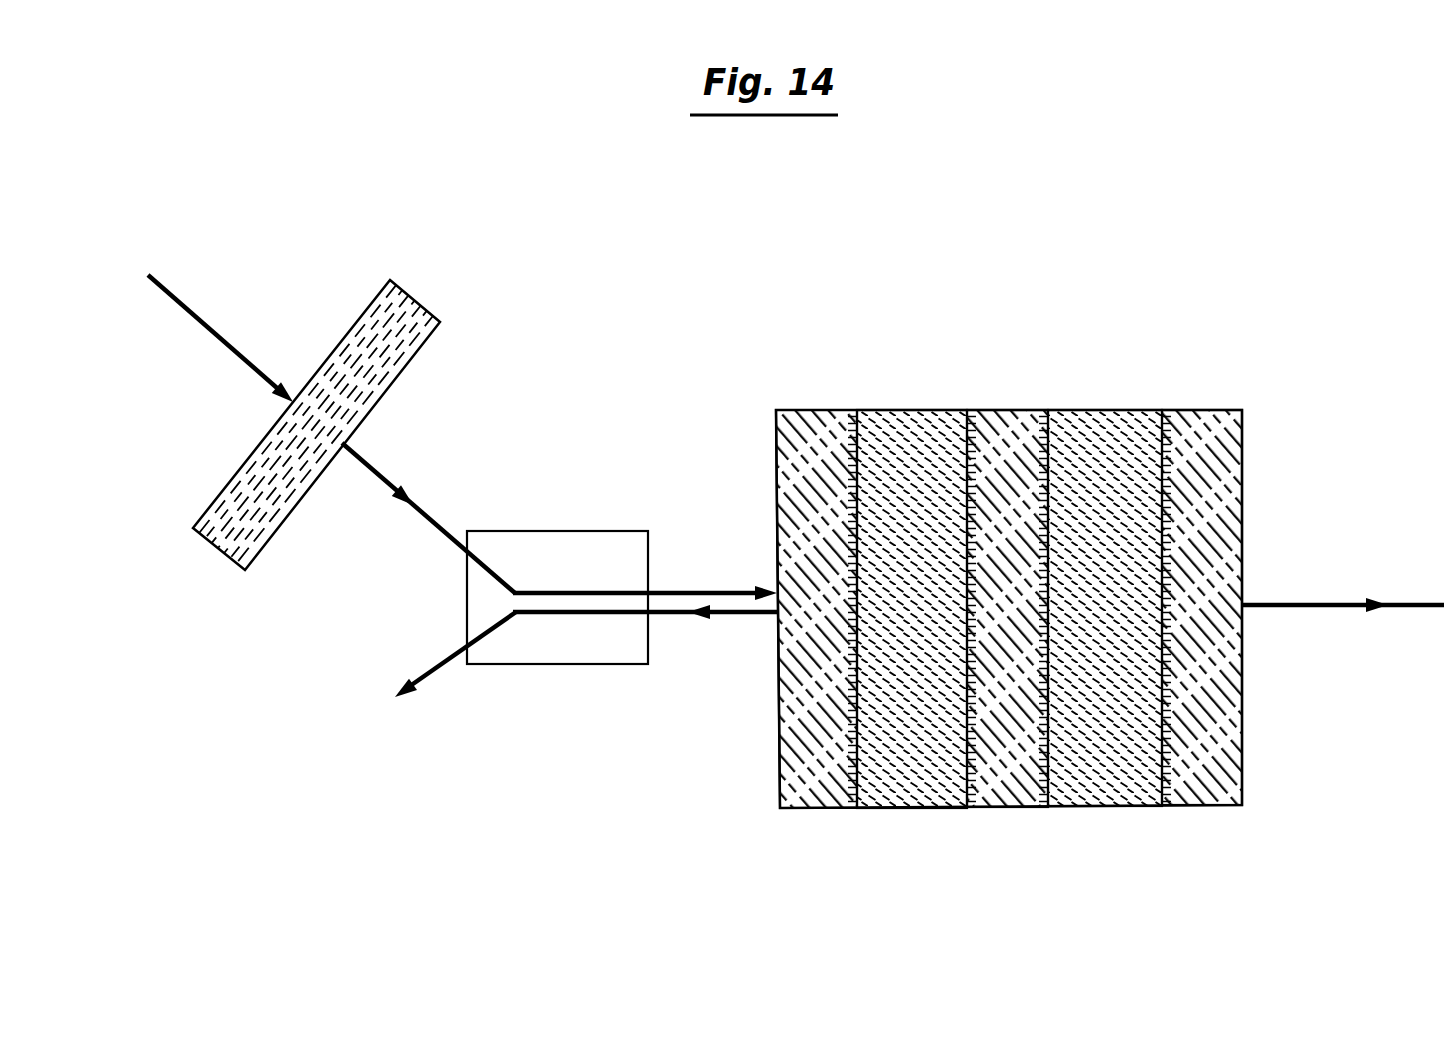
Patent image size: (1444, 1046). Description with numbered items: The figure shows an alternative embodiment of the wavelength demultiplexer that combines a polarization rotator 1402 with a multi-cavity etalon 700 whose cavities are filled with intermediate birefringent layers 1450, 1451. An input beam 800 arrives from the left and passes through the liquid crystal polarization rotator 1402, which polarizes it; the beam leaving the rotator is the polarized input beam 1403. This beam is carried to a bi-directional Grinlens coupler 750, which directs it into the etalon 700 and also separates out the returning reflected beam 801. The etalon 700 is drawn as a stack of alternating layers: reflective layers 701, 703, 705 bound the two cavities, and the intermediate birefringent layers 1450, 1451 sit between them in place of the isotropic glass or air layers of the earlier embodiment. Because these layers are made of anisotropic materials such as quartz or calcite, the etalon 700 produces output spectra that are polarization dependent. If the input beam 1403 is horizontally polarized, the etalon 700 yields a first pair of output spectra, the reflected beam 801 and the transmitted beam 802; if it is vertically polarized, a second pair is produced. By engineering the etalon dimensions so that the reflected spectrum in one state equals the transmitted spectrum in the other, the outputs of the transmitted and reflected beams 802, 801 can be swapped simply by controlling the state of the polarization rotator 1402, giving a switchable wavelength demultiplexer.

The multi-cavity etalon 700 is at (1009, 564).
The reflective layer of the etalon 701 is at (828, 410).
The reflective layer of the etalon 703 is at (1020, 410).
The reflective layer of the etalon 705 is at (1213, 410).
The bi-directional Grinlens coupler 750 is at (567, 533).
The input beam 800 is at (205, 317).
The reflected beam 801 is at (443, 667).
The transmitted beam 802 is at (1317, 605).
The polarization rotator 1402 is at (407, 362).
The input beam 1403 is at (372, 477).
The intermediate birefringent layer 1450 is at (913, 798).
The intermediate birefringent layer 1451 is at (1117, 790).